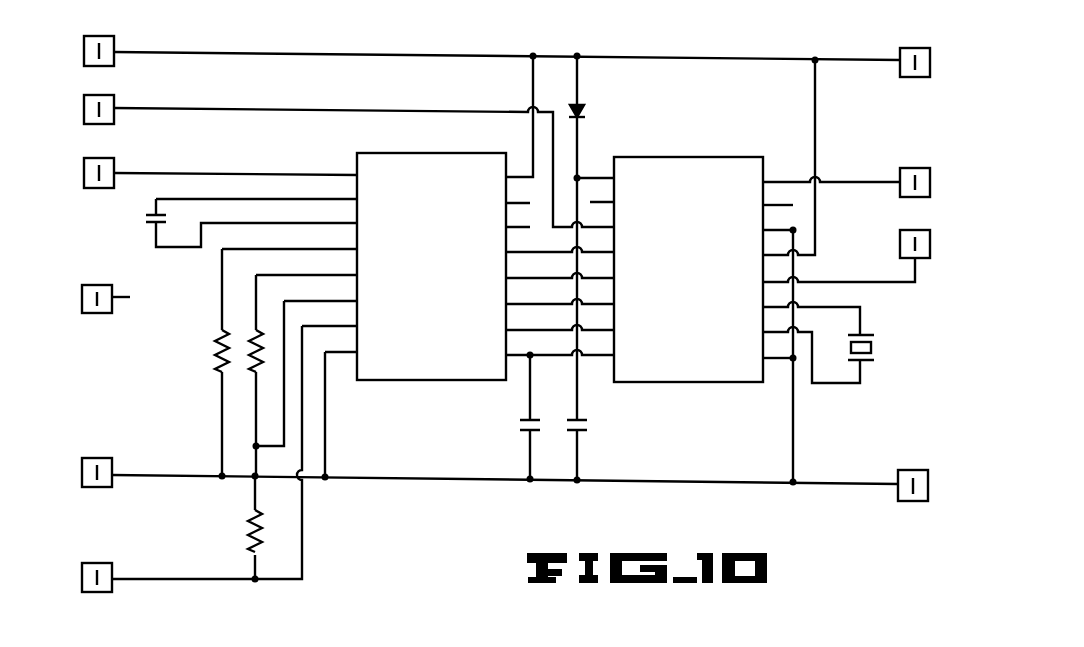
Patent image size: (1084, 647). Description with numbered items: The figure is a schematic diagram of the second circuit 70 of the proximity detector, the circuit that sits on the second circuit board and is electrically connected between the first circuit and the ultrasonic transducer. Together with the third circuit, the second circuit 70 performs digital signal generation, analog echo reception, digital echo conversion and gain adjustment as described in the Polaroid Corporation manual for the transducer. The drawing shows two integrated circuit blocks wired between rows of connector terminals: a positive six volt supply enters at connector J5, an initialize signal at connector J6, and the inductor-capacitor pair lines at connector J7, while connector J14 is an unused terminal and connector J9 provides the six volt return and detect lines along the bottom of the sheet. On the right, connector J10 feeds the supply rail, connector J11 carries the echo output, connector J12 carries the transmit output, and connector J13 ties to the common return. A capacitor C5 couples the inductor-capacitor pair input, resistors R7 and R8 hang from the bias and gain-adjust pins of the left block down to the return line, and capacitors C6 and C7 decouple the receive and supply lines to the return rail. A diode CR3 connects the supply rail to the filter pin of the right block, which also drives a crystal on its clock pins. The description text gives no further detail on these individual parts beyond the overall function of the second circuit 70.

The second circuit 70 is at (703, 52).
The +6V connector J5 is at (125, 40).
The INIT connector J6 is at (127, 99).
The LC pair connector J7 is at (143, 162).
The 6V return / detect connector J9 is at (141, 513).
The connector J10 is at (913, 51).
The echo connector J11 is at (882, 171).
The transmit connector J12 is at (868, 246).
The ground connector J13 is at (911, 475).
The connector J14 is at (106, 288).
The capacitor C5 is at (236, 223).
The capacitor C6 is at (514, 417).
The capacitor C7 is at (590, 425).
The resistor R7 is at (269, 362).
The resistor R8 is at (293, 375).
The diode CR3 is at (598, 267).